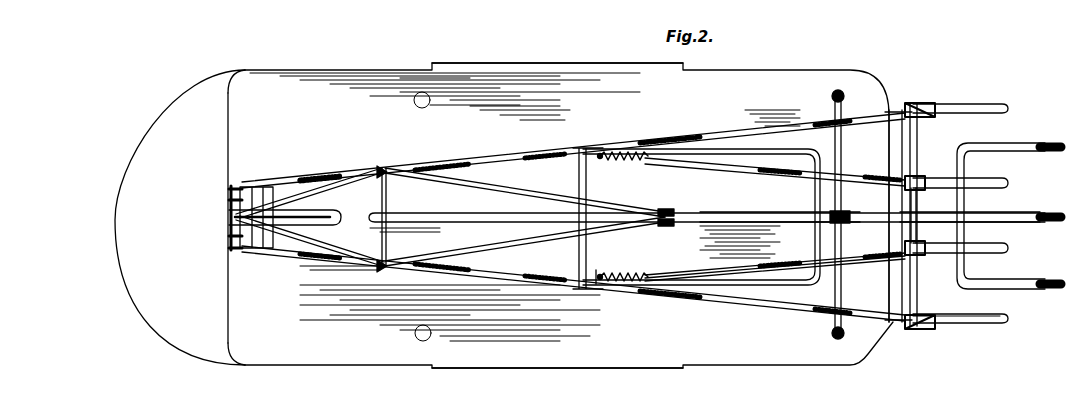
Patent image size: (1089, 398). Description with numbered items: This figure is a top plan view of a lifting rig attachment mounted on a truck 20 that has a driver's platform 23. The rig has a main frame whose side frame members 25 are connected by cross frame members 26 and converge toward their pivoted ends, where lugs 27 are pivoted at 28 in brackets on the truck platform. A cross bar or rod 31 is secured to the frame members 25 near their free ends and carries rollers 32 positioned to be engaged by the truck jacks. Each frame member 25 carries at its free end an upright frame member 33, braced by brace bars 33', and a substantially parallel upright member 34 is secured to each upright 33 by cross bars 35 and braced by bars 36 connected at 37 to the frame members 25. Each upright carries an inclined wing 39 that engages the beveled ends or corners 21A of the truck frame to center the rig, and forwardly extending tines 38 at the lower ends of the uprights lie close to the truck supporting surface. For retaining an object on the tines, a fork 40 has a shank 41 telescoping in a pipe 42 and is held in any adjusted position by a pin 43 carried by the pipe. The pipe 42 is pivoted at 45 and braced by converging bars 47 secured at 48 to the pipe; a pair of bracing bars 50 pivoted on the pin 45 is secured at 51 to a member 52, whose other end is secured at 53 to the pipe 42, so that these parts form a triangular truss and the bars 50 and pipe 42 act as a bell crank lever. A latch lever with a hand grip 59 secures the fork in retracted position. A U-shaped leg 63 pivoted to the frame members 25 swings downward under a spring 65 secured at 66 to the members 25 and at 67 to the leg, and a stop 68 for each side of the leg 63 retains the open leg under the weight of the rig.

The truck 20 is at (724, 356).
The beveled ends or corners of the truck frame 21A is at (853, 128).
The driver's platform 23 is at (145, 262).
The side frame members 25 is at (293, 257).
The cross frame members 26 is at (270, 193).
The lugs 27 is at (506, 229).
The pivot 28 is at (266, 396).
The cross bar or rod 31 is at (916, 116).
The rollers 32 is at (840, 91).
The upright frame member 33 is at (955, 209).
The brace bars 33' is at (492, 217).
The upright member 34 is at (918, 252).
The cross bars 35 is at (913, 286).
The bars 36 is at (800, 268).
The connection of bars 36 to frame members 37 is at (582, 286).
The tines 38 is at (983, 322).
The wing 39 is at (894, 108).
The fork 40 is at (1040, 210).
The shank 41 is at (913, 215).
The pipe 42 is at (755, 213).
The pin 43 is at (848, 223).
The pivot pin 45 is at (398, 168).
The converging bars 47 is at (610, 196).
The connection of converging bars to pipe 48 is at (667, 210).
The bracing bars 50 is at (300, 182).
The connection of bracing bars to member 52 51 is at (267, 203).
The member 52 is at (475, 215).
The connection of member 52 to pipe 53 is at (668, 222).
The hand grip 59 is at (227, 207).
The U-shaped leg 63 is at (755, 283).
The spring 65 is at (612, 273).
The spring attachment to frame members 66 is at (598, 270).
The spring attachment to leg 67 is at (652, 272).
The stop 68 is at (607, 152).